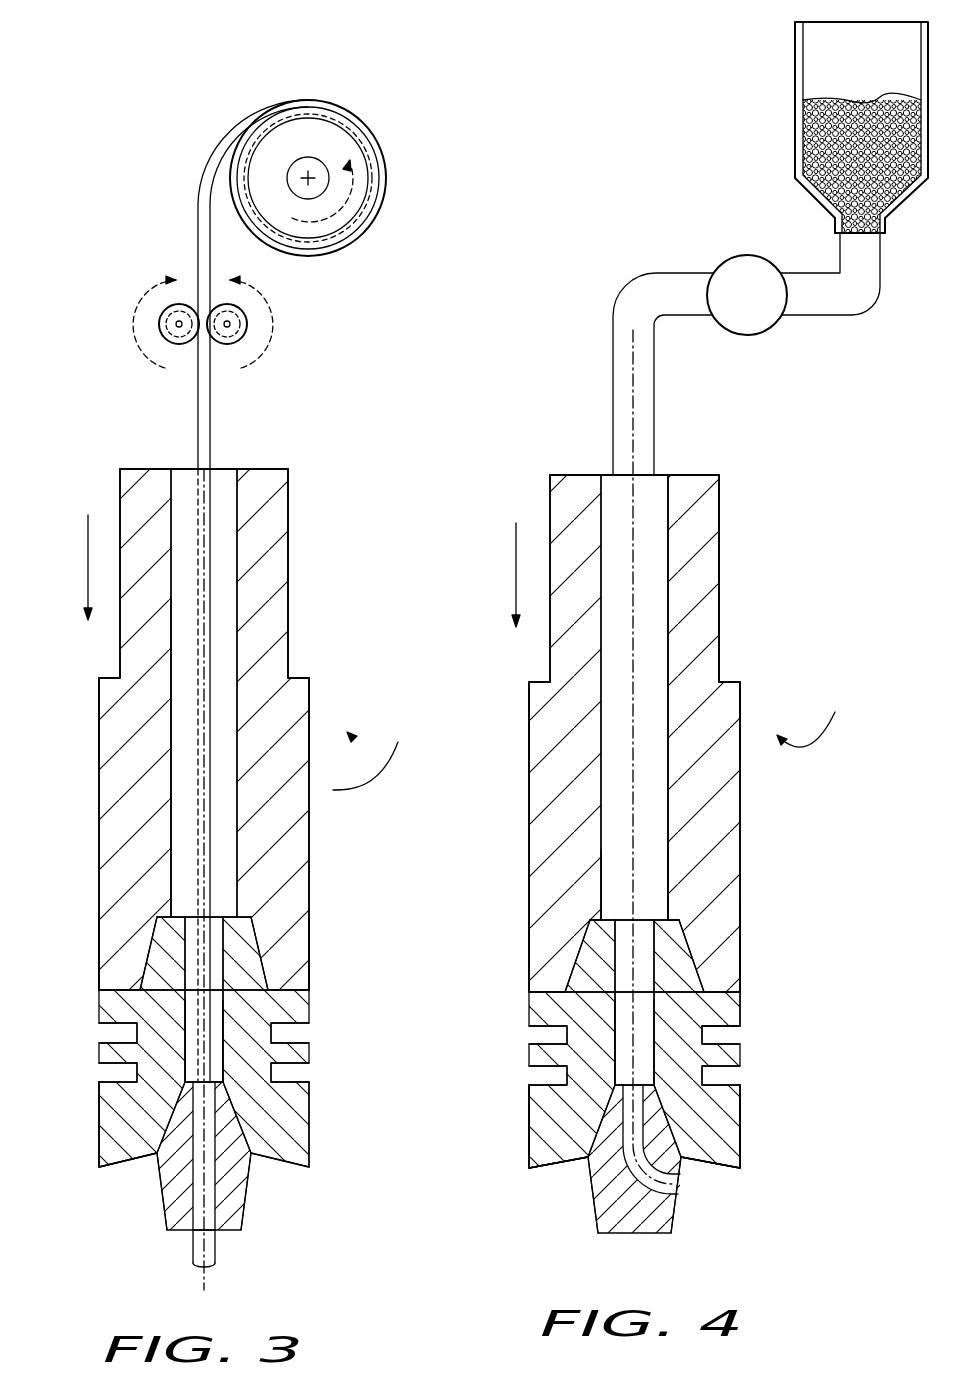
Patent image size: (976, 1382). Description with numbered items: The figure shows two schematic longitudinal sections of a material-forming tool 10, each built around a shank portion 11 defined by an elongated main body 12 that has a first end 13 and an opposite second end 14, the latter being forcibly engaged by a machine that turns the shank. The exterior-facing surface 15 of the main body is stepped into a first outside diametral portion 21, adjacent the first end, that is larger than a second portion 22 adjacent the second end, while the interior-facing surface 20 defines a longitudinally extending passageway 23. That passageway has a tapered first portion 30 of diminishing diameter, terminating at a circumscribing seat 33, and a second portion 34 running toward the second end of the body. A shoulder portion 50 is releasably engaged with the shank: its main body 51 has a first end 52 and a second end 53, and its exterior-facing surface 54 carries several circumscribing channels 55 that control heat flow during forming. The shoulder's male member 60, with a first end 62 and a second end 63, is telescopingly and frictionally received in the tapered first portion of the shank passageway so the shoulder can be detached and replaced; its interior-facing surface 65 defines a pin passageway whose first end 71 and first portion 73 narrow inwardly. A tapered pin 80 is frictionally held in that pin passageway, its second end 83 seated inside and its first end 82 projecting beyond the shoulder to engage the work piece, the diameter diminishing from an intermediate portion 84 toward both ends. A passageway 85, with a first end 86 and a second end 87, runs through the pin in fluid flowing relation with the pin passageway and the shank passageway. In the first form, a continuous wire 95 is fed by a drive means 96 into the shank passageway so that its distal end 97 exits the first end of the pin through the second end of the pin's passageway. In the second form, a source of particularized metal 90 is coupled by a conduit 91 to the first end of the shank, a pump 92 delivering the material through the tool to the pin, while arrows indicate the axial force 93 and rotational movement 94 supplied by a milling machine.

In FIG. 3, the material-forming tool 10 is at (85, 748).
In FIG. 4, the material-forming tool 10 is at (513, 723).
In FIG. 3, the shank portion 11 is at (305, 624).
In FIG. 4, the shank portion 11 is at (780, 800).
In FIG. 3, the main body 12 is at (312, 700).
In FIG. 4, the main body 12 is at (740, 890).
In FIG. 3, the first end 13 is at (310, 987).
In FIG. 4, the first end 13 is at (740, 983).
In FIG. 3, the second end 14 is at (287, 469).
In FIG. 4, the second end 14 is at (718, 475).
In FIG. 3, the exterior-facing surface 15 is at (310, 678).
In FIG. 4, the exterior-facing surface 15 is at (740, 853).
In FIG. 3, the interior-facing surface 20 is at (178, 715).
In FIG. 4, the interior-facing surface 20 is at (605, 722).
In FIG. 3, the first outside diametral portion 21 is at (312, 848).
In FIG. 4, the first outside diametral portion 21 is at (740, 928).
In FIG. 3, the second portion 22 is at (260, 538).
In FIG. 4, the second portion 22 is at (690, 540).
In FIG. 3, the longitudinally extending passageway 23 is at (220, 588).
In FIG. 4, the longitudinally extending passageway 23 is at (650, 660).
In FIG. 3, the first portion 30 is at (180, 1000).
In FIG. 4, the first portion 30 is at (583, 953).
In FIG. 4, the circumscribing seat 33 is at (600, 905).
In FIG. 3, the second portion 34 is at (185, 665).
In FIG. 4, the second portion 34 is at (648, 590).
In FIG. 4, the shoulder portion 50 is at (523, 1157).
In FIG. 3, the main body 51 is at (290, 1122).
In FIG. 4, the main body 51 is at (720, 1125).
In FIG. 4, the first end 52 is at (745, 1170).
In FIG. 4, the second end 53 is at (740, 1015).
In FIG. 3, the exterior-facing surface 54 is at (100, 1130).
In FIG. 4, the exterior-facing surface 54 is at (520, 1135).
In FIG. 3, the circumscribing channels 55 is at (300, 1030).
In FIG. 4, the circumscribing channels 55 is at (735, 1035).
In FIG. 3, the male member 60 is at (265, 942).
In FIG. 4, the male member 60 is at (563, 967).
In FIG. 4, the first end 62 is at (740, 953).
In FIG. 4, the second end 63 is at (662, 918).
In FIG. 3, the interior-facing surface 65 is at (190, 1030).
In FIG. 4, the interior-facing surface 65 is at (605, 1030).
In FIG. 3, the first end 71 is at (265, 1158).
In FIG. 3, the first portion 73 is at (130, 1100).
In FIG. 3, the pin 80 is at (165, 1235).
In FIG. 4, the pin 80 is at (592, 1235).
In FIG. 3, the first end 82 is at (240, 1235).
In FIG. 4, the first end 82 is at (672, 1235).
In FIG. 3, the second end 83 is at (225, 1090).
In FIG. 4, the second end 83 is at (650, 1090).
In FIG. 4, the intermediate portion 84 is at (620, 1175).
In FIG. 3, the passageway 85 is at (165, 1185).
In FIG. 4, the passageway 85 is at (618, 1178).
In FIG. 4, the first end 86 is at (540, 1105).
In FIG. 3, the second end 87 is at (228, 1240).
In FIG. 4, the second end 87 is at (680, 1200).
In FIG. 4, the source of particularized metal 90 is at (800, 128).
In FIG. 4, the conduit 91 is at (642, 297).
In FIG. 4, the pump 92 is at (740, 258).
In FIG. 3, the means for imparting axial force 93 is at (85, 560).
In FIG. 4, the means for imparting axial force 93 is at (517, 568).
In FIG. 3, the means for imparting rotational movement 94 is at (377, 751).
In FIG. 4, the means for imparting rotational movement 94 is at (815, 711).
In FIG. 3, the solid/continuous wire 95 is at (370, 214).
In FIG. 3, the means for driving the continuous wire 96 is at (223, 350).
In FIG. 3, the distal end 97 is at (197, 1240).